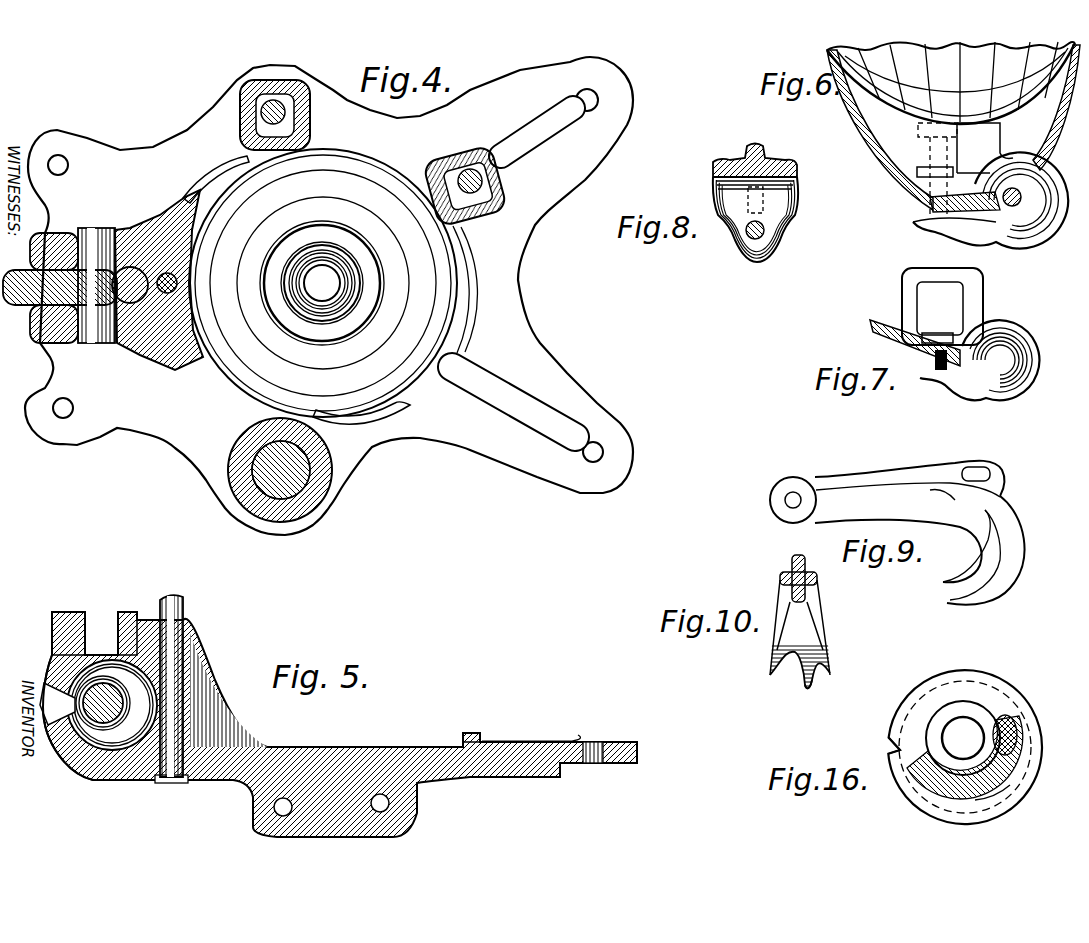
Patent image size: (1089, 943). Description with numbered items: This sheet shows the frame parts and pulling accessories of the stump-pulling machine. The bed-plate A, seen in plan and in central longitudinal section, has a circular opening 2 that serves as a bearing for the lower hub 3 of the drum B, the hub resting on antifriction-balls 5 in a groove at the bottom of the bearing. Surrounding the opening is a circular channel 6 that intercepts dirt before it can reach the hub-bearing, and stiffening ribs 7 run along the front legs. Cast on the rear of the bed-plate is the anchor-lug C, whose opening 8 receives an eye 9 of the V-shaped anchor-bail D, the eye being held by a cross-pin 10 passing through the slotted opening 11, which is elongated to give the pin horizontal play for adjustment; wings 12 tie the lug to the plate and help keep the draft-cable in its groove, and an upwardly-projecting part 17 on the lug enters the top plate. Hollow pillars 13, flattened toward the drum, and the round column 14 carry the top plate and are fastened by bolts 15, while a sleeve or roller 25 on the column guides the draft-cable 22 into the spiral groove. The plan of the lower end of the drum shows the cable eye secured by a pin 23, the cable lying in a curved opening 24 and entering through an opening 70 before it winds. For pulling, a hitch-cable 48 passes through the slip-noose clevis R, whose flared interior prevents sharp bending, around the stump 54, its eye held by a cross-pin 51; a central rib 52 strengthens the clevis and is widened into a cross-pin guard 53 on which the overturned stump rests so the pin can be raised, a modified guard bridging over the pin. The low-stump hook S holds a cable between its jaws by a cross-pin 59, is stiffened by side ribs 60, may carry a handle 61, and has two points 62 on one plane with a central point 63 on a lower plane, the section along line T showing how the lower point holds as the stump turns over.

In FIG. 4, the bed-plate A is at (329, 296).
In FIG. 5, the bed-plate A is at (555, 727).
In FIG. 4, the circular opening 2 is at (366, 283).
In FIG. 5, the circular opening 2 is at (365, 758).
In FIG. 16, the lower hub 3 is at (963, 738).
In FIG. 5, the antifriction-balls 5 is at (275, 812).
In FIG. 4, the circular channel or groove 6 is at (323, 283).
In FIG. 4, the strengthening and stiffening ribs 7 is at (513, 272).
In FIG. 5, the strengthening and stiffening ribs 7 is at (506, 741).
In FIG. 4, the opening 8 is at (40, 305).
In FIG. 5, the opening 8 is at (55, 755).
In FIG. 4, the eye 9 is at (130, 285).
In FIG. 5, the eye 9 is at (112, 705).
In FIG. 4, the cross-pin 10 is at (96, 285).
In FIG. 5, the cross-pin 10 is at (103, 703).
In FIG. 4, the slotted opening 11 is at (395, 408).
In FIG. 5, the slotted opening 11 is at (95, 718).
In FIG. 4, the ribs or wings 12 is at (212, 176).
In FIG. 5, the ribs or wings 12 is at (210, 722).
In FIG. 4, the hollow pillars 13 is at (308, 118).
In FIG. 4, the round column 14 is at (250, 498).
In FIG. 4, the bolts 15 is at (260, 115).
In FIG. 5, the bolts 15 is at (185, 608).
In FIG. 5, the upwardly-projecting part 17 is at (90, 605).
In FIG. 16, the draft-cable 22 is at (917, 705).
In FIG. 16, the pin 23 is at (1005, 735).
In FIG. 16, the opening 24 is at (1000, 793).
In FIG. 4, the sleeve or roller 25 is at (300, 493).
In FIG. 6, the hitch-cable 48 is at (850, 118).
In FIG. 7, the hitch-cable 48 is at (878, 315).
In FIG. 6, the cross-pin 51 is at (928, 148).
In FIG. 8, the cross-pin 51 is at (764, 232).
In FIG. 7, the cross-pin 51 is at (937, 340).
In FIG. 6, the central rib 52 is at (1060, 207).
In FIG. 8, the central rib 52 is at (757, 147).
In FIG. 7, the central rib 52 is at (1030, 368).
In FIG. 6, the cross-pin guard 53 is at (985, 148).
In FIG. 7, the cross-pin guard 53 is at (960, 268).
In FIG. 6, the stump 54 is at (951, 83).
In FIG. 9, the cross-pin 59 is at (797, 495).
In FIG. 9, the ribs 60 is at (950, 495).
In FIG. 9, the handle 61 is at (978, 470).
In FIG. 9, the points 62 is at (943, 582).
In FIG. 10, the points 62 is at (770, 675).
In FIG. 9, the central point 63 is at (947, 603).
In FIG. 10, the central point 63 is at (806, 690).
In FIG. 16, the opening 70 is at (903, 752).
In FIG. 16, the drum B is at (940, 698).
In FIG. 4, the anchor-lug C is at (159, 280).
In FIG. 5, the anchor-lug C is at (130, 782).
In FIG. 5, the anchor-bail D is at (57, 704).
In FIG. 6, the slip-noose clevis R is at (1040, 185).
In FIG. 8, the slip-noose clevis R is at (755, 219).
In FIG. 7, the slip-noose clevis R is at (990, 320).
In FIG. 9, the low-stump hook S is at (905, 485).
In FIG. 10, the low-stump hook S is at (800, 615).
In FIG. 9, the section line T is at (986, 543).
In FIG. 9, the inner hook T' is at (964, 546).